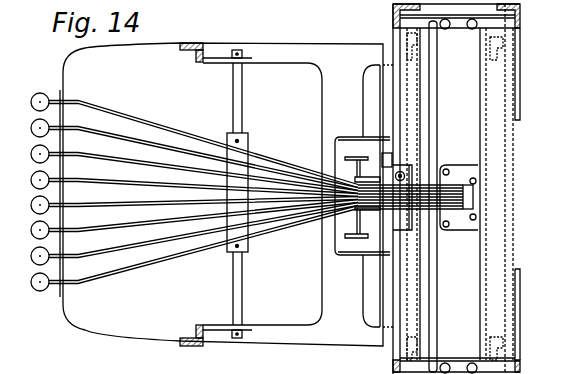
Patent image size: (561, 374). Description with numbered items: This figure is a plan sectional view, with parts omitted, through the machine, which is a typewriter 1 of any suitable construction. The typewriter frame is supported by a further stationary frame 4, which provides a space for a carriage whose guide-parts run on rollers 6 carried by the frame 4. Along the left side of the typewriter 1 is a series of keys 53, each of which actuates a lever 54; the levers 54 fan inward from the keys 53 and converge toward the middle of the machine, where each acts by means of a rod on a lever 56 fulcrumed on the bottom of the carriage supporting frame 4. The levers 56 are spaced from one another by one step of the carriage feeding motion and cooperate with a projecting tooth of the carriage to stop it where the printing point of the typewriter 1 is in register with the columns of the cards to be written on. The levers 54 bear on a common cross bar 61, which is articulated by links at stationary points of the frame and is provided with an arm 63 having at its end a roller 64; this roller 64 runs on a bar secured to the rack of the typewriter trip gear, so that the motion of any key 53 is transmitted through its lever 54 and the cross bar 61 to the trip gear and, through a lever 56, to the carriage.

The typewriter 1 is at (63, 71).
The stationary frame 4 is at (517, 313).
The rollers 6 is at (496, 346).
The keys 53 is at (38, 127).
The levers 54 is at (167, 128).
The lever 56 is at (457, 183).
The cross bar 61 is at (357, 221).
The arm 63 is at (368, 176).
The roller 64 is at (402, 172).